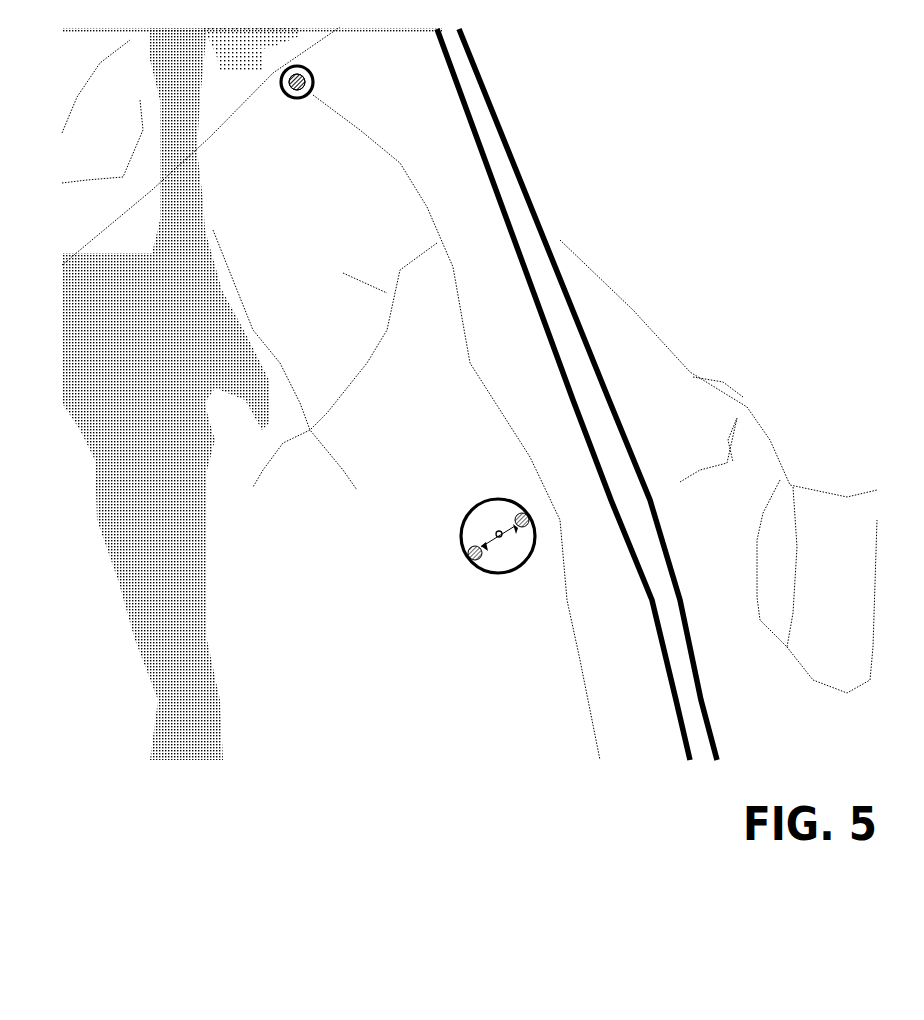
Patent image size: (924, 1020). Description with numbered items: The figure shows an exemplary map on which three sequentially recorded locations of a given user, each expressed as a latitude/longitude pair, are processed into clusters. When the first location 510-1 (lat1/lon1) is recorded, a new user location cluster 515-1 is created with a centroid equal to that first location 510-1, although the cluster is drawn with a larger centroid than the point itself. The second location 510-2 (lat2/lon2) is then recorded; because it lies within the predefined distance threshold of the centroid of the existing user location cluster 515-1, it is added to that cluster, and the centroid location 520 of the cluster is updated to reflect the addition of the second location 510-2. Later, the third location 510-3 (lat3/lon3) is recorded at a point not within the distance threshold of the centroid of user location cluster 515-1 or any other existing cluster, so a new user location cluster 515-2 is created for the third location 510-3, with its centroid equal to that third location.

The first location 510-1 is at (522, 520).
The second location 510-2 is at (475, 553).
The third location 510-3 is at (298, 98).
The user location cluster 515-1 is at (500, 498).
The user location cluster 515-2 is at (350, 68).
The centroid location 520 is at (497, 538).